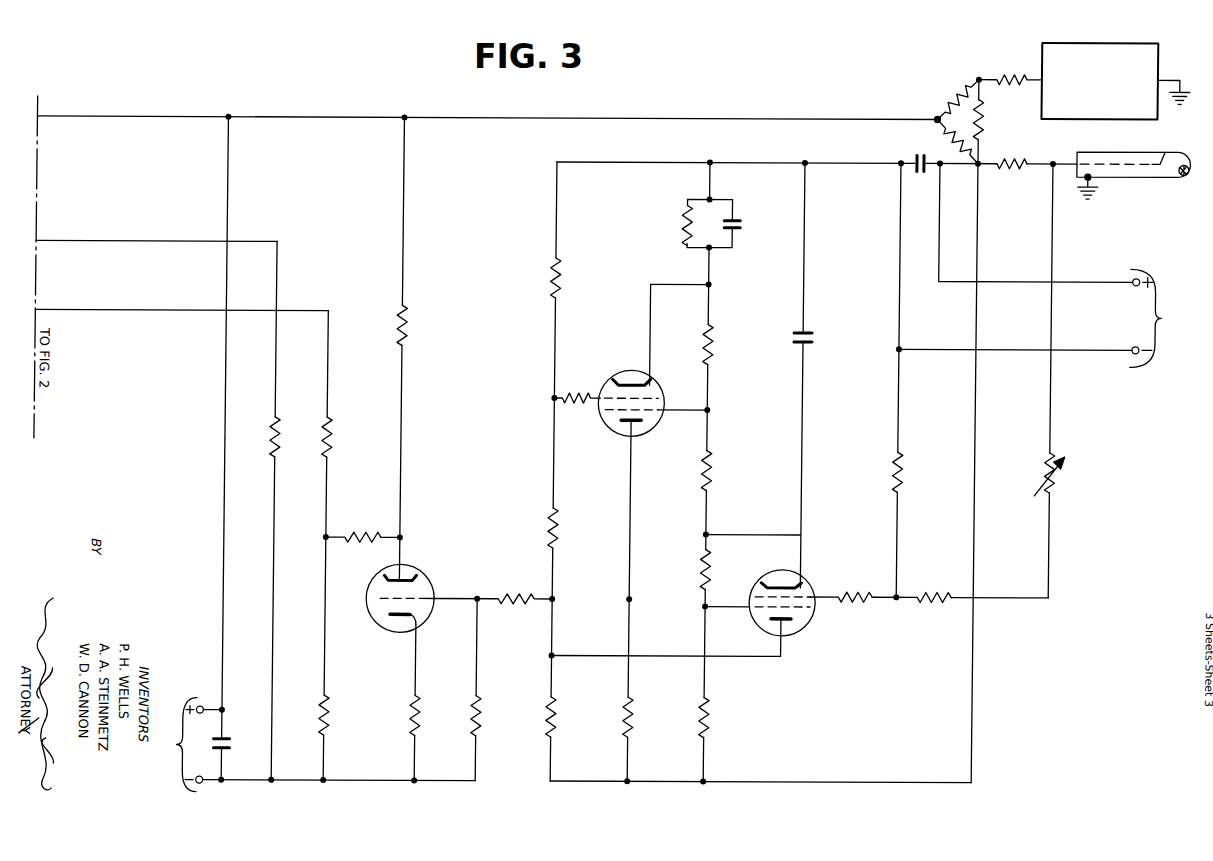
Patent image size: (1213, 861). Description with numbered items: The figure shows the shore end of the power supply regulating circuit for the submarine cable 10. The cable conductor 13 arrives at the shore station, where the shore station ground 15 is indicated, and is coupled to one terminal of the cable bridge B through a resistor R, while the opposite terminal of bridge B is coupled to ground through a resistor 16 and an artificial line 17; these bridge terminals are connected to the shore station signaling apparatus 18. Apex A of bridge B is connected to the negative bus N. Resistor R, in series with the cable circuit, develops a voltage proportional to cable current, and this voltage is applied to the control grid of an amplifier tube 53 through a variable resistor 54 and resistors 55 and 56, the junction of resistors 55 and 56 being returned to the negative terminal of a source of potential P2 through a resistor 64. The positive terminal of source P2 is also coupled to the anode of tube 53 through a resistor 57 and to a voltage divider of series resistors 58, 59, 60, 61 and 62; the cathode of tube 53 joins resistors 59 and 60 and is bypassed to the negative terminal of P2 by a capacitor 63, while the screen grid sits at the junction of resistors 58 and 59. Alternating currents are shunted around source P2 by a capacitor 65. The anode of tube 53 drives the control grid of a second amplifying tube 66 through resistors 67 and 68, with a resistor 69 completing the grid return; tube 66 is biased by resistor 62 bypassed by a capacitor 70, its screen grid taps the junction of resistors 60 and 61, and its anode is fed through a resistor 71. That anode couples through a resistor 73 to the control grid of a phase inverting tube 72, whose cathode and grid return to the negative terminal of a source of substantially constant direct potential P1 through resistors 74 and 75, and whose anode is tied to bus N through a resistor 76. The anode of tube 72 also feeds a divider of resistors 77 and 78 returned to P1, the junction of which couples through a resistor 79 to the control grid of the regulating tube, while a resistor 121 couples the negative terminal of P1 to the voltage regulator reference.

The submarine cable 10 is at (1124, 149).
The cable conductor 13 is at (1165, 150).
The shore station ground 15 is at (1098, 191).
The resistor 16 is at (999, 76).
The artificial line 17 is at (1157, 59).
The shore station signaling apparatus 18 is at (986, 117).
The amplifier tube 53 is at (813, 625).
The variable resistor 54 is at (1063, 479).
The resistor 55 is at (954, 594).
The resistor 56 is at (878, 594).
The resistor 57 is at (564, 726).
The resistor 58 is at (714, 726).
The resistor 59 is at (718, 573).
The resistor 60 is at (716, 470).
The resistor 61 is at (716, 343).
The resistor 62 is at (684, 223).
The capacitor 63 is at (815, 339).
The resistor 64 is at (906, 477).
The capacitor 65 is at (918, 151).
The amplifying tube 66 is at (608, 380).
The resistor 67 is at (565, 541).
The resistor 68 is at (591, 405).
The resistor 69 is at (563, 290).
The capacitor 70 is at (742, 224).
The resistor 71 is at (638, 726).
The phase inverting tube 72 is at (428, 575).
The resistor 73 is at (536, 593).
The resistor 74 is at (417, 723).
The resistor 75 is at (478, 723).
The resistor 76 is at (409, 323).
The resistor 77 is at (366, 549).
The resistor 78 is at (323, 723).
The resistor 79 is at (334, 441).
The resistor 121 is at (274, 440).
The apex of cable bridge A is at (935, 115).
The cable bridge B is at (969, 125).
The resistor R is at (1012, 169).
The negative bus N is at (468, 118).
The source of substantially constant direct potential P1 is at (183, 746).
The source of potential P2 is at (1163, 316).